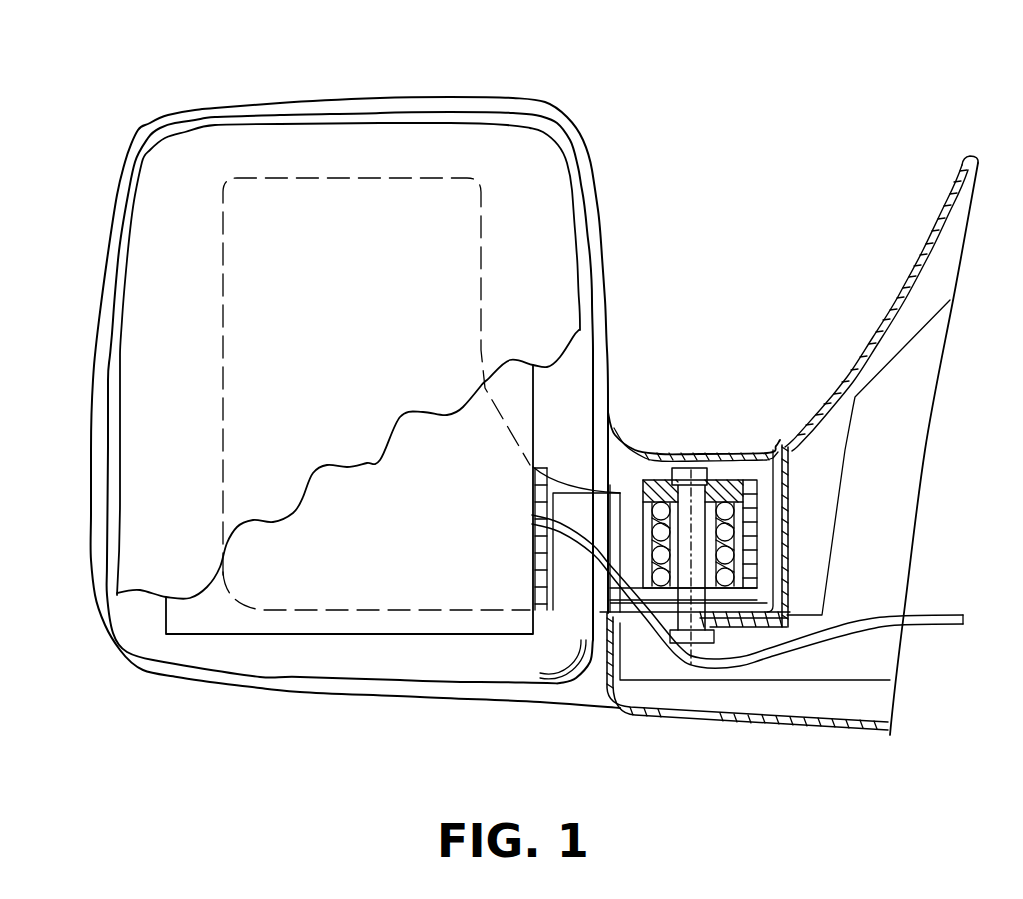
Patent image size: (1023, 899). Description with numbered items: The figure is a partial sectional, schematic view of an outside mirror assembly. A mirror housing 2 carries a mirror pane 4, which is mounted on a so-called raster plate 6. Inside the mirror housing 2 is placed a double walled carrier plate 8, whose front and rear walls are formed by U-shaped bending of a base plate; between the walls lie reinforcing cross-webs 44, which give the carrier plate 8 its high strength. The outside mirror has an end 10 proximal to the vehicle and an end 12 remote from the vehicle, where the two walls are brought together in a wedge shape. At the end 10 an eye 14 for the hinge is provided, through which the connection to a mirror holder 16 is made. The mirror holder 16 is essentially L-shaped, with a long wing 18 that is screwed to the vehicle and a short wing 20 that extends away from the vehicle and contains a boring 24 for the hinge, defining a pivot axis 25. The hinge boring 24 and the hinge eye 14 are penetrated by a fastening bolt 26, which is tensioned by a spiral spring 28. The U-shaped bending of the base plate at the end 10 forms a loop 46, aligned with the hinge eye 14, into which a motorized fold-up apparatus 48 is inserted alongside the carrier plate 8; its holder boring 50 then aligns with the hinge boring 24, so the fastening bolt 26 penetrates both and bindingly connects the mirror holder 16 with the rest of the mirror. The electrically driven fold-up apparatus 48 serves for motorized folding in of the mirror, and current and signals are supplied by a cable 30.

The mirror housing 2 is at (283, 97).
The mirror pane 4 is at (410, 143).
The raster plate 6 is at (207, 615).
The double walled carrier plate 8 is at (468, 585).
The end proximal to the vehicle 10 is at (689, 138).
The end remote from the vehicle 12 is at (92, 128).
The eye for the hinge 14 is at (728, 612).
The mirror holder 16 is at (891, 192).
The long wing 18 is at (963, 195).
The short wing 20 is at (878, 705).
The boring for the hinge 24 is at (662, 478).
The pivot axis 25 is at (693, 503).
The fastening bolt 26 is at (685, 503).
The spiral spring 28 is at (745, 483).
The cable 30 is at (933, 623).
The cross-webs 44 is at (535, 493).
The loop 46 is at (622, 487).
The motorized fold-up apparatus 48 is at (565, 583).
The holder boring 50 is at (718, 587).